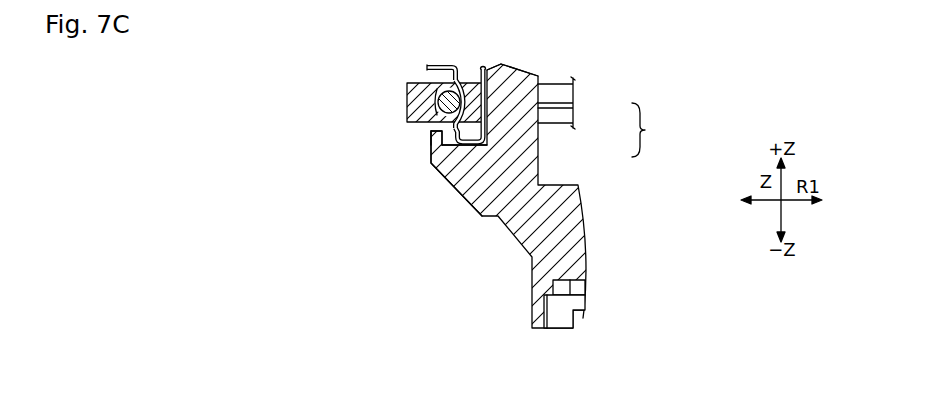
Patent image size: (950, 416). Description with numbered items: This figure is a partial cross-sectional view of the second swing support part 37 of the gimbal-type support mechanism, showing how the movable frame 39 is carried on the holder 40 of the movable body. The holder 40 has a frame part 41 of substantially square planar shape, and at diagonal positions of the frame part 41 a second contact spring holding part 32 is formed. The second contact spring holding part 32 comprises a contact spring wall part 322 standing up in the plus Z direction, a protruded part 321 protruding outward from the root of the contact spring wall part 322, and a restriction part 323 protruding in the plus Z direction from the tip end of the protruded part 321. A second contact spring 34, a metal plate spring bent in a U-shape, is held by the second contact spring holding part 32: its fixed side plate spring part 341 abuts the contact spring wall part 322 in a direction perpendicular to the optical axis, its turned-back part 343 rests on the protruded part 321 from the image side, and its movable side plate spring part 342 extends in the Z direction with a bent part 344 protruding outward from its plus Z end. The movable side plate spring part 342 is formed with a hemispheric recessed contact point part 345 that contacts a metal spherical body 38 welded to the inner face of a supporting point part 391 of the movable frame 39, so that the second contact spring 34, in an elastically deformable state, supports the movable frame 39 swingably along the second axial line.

The second contact spring holding part 32 is at (541, 133).
The second contact spring 34 is at (492, 108).
The second swing support part 37 is at (650, 130).
The spherical body 38 is at (438, 91).
The movable frame 39 is at (305, 208).
The supporting point part 391 is at (415, 96).
The holder 40 is at (564, 304).
The frame part 41 is at (499, 285).
The protruded part 321 is at (430, 153).
The contact spring wall part 322 is at (500, 63).
The restriction part 323 is at (431, 132).
The fixed side plate spring part 341 is at (480, 69).
The movable side plate spring part 342 is at (441, 170).
The turned-back part 343 is at (462, 146).
The bent part 344 is at (441, 64).
The contact point part 345 is at (469, 82).